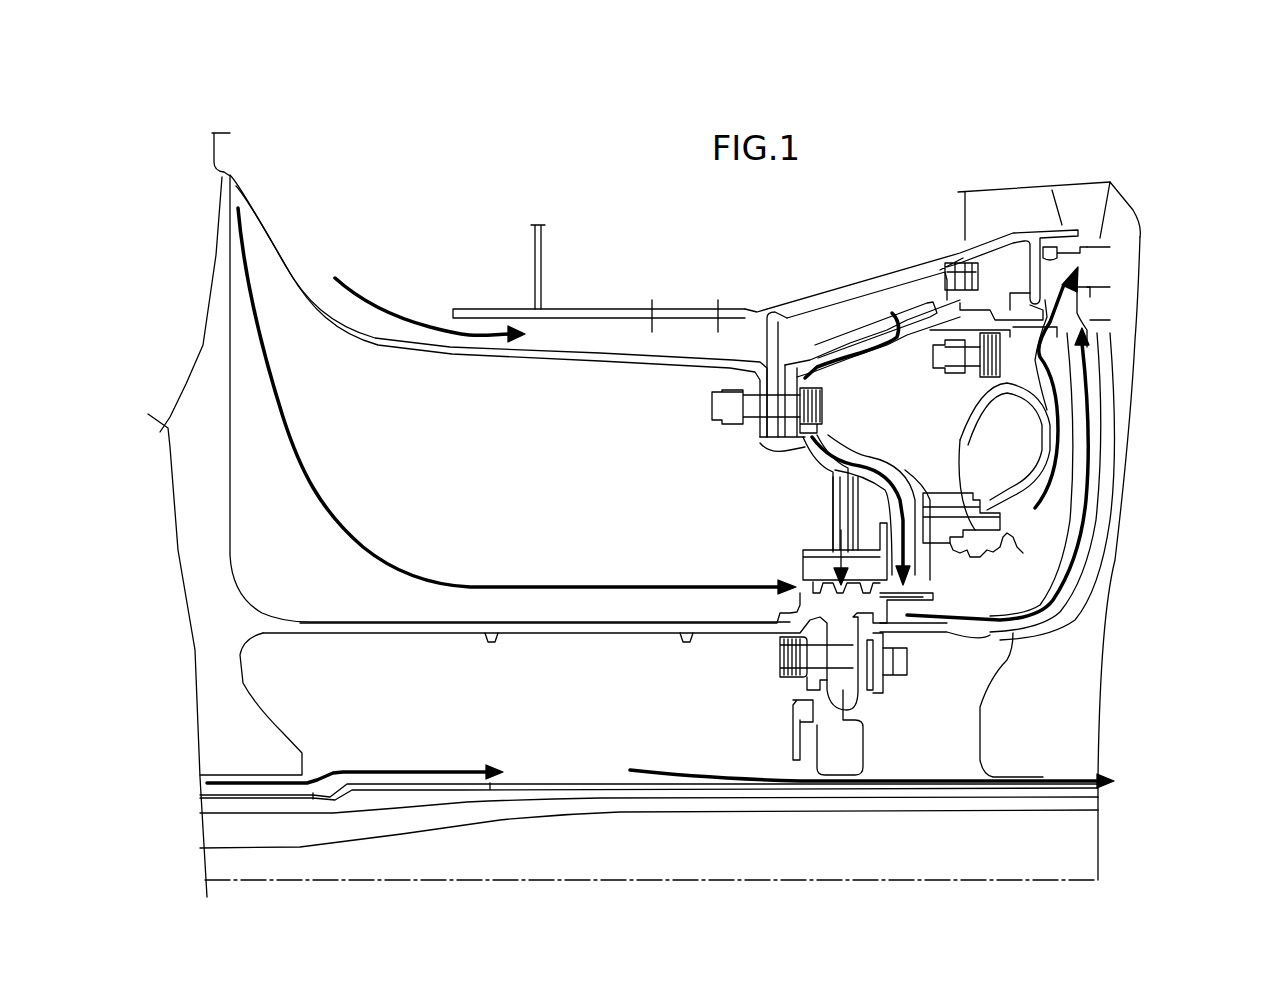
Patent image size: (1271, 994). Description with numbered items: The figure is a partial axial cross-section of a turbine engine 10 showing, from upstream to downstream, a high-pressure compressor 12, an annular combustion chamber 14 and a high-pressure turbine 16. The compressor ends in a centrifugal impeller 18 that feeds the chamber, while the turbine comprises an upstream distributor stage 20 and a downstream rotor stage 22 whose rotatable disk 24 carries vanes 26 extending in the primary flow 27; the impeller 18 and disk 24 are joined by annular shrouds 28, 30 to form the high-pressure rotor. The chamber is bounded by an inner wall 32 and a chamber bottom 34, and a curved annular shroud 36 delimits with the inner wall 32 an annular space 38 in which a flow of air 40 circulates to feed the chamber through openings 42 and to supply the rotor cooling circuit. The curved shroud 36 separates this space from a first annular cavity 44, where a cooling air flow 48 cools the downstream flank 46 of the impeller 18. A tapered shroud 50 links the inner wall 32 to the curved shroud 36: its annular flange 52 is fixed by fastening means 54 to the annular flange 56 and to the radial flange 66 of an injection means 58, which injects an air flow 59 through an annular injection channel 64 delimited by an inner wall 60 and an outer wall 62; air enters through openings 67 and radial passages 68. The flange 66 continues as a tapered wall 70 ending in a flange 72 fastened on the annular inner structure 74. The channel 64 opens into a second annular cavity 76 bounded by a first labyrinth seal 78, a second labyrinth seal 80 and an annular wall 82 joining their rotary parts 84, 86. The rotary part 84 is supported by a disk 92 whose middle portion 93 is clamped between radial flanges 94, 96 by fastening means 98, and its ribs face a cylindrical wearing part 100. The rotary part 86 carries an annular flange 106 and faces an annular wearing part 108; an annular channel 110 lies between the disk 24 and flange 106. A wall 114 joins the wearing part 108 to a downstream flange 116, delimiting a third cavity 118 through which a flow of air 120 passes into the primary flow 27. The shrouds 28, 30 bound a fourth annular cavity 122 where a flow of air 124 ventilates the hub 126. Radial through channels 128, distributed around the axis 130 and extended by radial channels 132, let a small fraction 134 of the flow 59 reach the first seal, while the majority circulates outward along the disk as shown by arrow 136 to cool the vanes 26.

The turbine engine 10 is at (1160, 229).
The high-pressure compressor 12 is at (283, 705).
The annular combustion chamber 14 is at (642, 248).
The high-pressure turbine 16 is at (1167, 123).
The centrifugal impeller 18 is at (222, 582).
The upstream distributor stage 20 is at (1010, 187).
The downstream rotor stage 22 is at (1123, 187).
The rotatable disk 24 is at (1087, 605).
The vanes 26 is at (1123, 220).
The primary flow 27 is at (1080, 210).
The annular shroud 28 is at (437, 627).
The annular shroud 30 is at (910, 630).
The inner wall 32 is at (570, 309).
The chamber bottom 34 is at (535, 268).
The curved annular shroud 36 is at (460, 347).
The annular space 38 is at (680, 332).
The flow of air 40 is at (375, 310).
The openings 42 is at (717, 310).
The first annular cavity 44 is at (535, 470).
The downstream flank 46 is at (233, 357).
The cooling air flow 48 is at (380, 553).
The tapered shroud 50 is at (823, 350).
The annular flange 52 is at (757, 383).
The fastening means 54 is at (817, 400).
The annular flange 56 is at (773, 383).
The injection means 58 is at (833, 437).
The air flow 59 is at (890, 480).
The inner wall 60 is at (868, 492).
The outer wall 62 is at (900, 430).
The annular injection channel 64 is at (863, 457).
The radial flange 66 is at (793, 367).
The openings 67 is at (903, 320).
The radial passages 68 is at (847, 367).
The tapered wall 70 is at (932, 340).
The flange 72 is at (1047, 268).
The annular inner structure 74 is at (983, 240).
The second annular cavity 76 is at (943, 547).
The first labyrinth seal 78 is at (790, 552).
The second labyrinth seal 80 is at (1015, 518).
The annular wall 82 is at (947, 620).
The rotary part 84 is at (800, 613).
The rotary part 86 is at (980, 627).
The disk 92 is at (840, 758).
The middle portion 93 is at (840, 657).
The radial flange 94 is at (817, 683).
The radial flange 96 is at (863, 687).
The fastening means 98 is at (892, 667).
The cylindrical wearing part 100 is at (827, 570).
The annular flange 106 is at (1073, 422).
The annular wearing part 108 is at (960, 523).
The annular channel 110 is at (1027, 627).
The wall 114 is at (1043, 423).
The downstream flange 116 is at (982, 367).
The third cavity 118 is at (1033, 492).
The flow of air 120 is at (1060, 443).
The fourth annular cavity 122 is at (649, 751).
The flow of air 124 is at (387, 771).
The hub 126 is at (1043, 760).
The radial through channels 128 is at (837, 543).
The axis 130 is at (680, 878).
The radial channels 132 is at (833, 510).
The small fraction 134 is at (833, 487).
The arrow 136 is at (1043, 467).